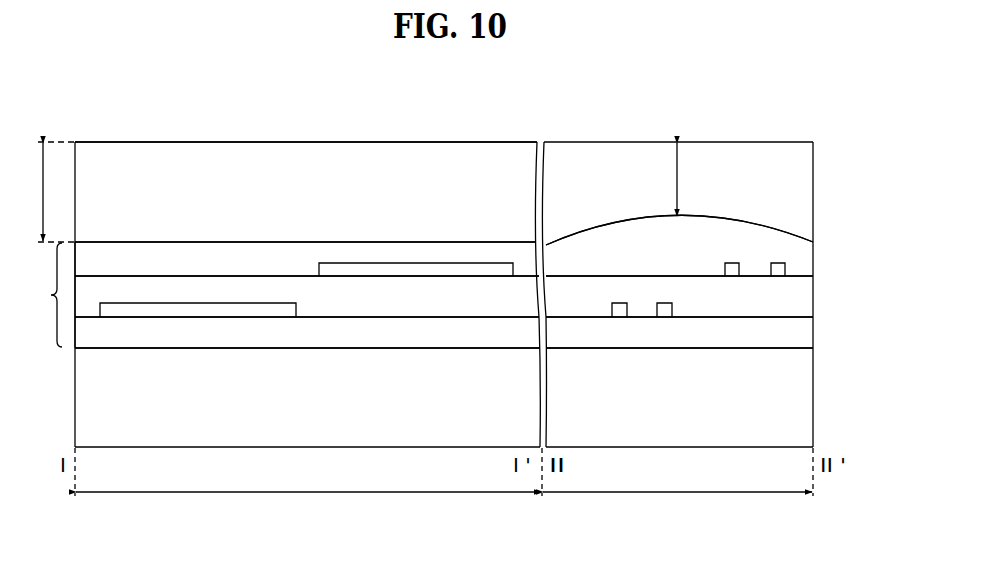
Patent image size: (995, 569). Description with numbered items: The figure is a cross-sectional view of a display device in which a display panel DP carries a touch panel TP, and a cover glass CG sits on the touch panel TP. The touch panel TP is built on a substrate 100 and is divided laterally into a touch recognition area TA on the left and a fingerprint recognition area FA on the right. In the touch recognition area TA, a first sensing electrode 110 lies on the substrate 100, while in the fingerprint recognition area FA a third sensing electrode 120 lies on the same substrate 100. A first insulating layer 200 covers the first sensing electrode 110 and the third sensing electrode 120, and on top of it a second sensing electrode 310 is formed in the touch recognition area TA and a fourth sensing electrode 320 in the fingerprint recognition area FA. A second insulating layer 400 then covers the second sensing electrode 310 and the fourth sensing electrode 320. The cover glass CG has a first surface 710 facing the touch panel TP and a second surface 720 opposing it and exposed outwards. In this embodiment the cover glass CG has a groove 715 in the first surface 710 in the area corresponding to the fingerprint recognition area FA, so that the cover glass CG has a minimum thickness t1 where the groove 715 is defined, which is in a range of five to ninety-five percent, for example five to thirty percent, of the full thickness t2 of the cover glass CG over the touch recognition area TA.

The first sensing electrode 110 is at (199, 310).
The third sensing electrode 120 is at (618, 310).
The second sensing electrode 310 is at (415, 270).
The fourth sensing electrode 320 is at (733, 268).
The substrate 100 is at (802, 333).
The first insulating layer 200 is at (802, 298).
The second insulating layer 400 is at (802, 263).
The first surface 710 is at (263, 242).
The groove 715 is at (675, 227).
The second surface 720 is at (340, 142).
The cover glass CG is at (802, 193).
The display panel DP is at (802, 403).
The touch panel TP is at (48, 295).
The touch recognition area TA is at (308, 507).
The fingerprint recognition area FA is at (677, 507).
The minimum thickness t1 is at (666, 179).
The thickness of the cover glass t2 is at (48, 192).